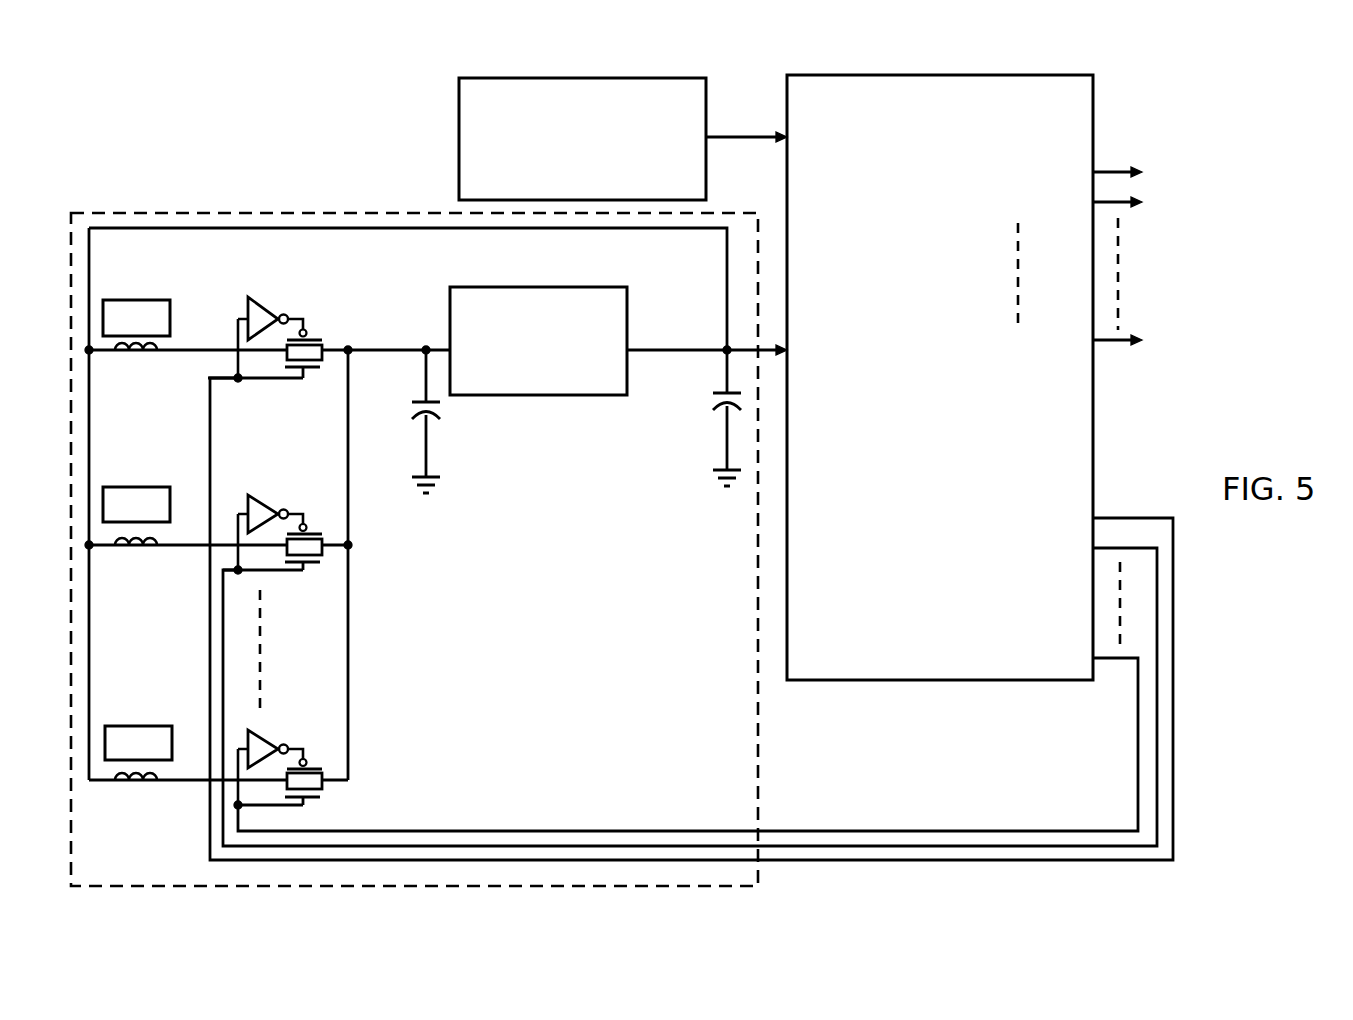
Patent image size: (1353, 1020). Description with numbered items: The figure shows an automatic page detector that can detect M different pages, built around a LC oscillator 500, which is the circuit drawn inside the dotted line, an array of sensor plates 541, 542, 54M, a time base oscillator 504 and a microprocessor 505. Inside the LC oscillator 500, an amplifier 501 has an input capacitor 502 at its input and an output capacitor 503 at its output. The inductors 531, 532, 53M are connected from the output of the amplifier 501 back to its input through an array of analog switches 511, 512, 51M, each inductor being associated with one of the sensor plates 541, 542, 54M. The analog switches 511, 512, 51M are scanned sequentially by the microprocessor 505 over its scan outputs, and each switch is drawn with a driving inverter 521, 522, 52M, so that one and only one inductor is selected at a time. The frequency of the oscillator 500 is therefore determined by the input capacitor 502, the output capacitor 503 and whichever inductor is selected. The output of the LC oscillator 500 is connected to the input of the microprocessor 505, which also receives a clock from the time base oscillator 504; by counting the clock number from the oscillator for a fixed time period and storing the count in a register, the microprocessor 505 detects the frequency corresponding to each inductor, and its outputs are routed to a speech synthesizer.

The LC oscillator 500 is at (86, 205).
The amplifier 501 is at (593, 290).
The input capacitor 502 is at (442, 408).
The output capacitor 503 is at (698, 405).
The time base oscillator 504 is at (459, 120).
The microprocessor 505 is at (1083, 118).
The analog switch 511 is at (327, 342).
The analog switch 512 is at (333, 531).
The analog switch 51M is at (327, 758).
The inverter 521 is at (265, 310).
The inverter 522 is at (257, 495).
The inverter 52M is at (275, 733).
The inductor 531 is at (135, 372).
The inductor 532 is at (135, 558).
The inductor 53M is at (140, 790).
The sensor plate 541 is at (157, 300).
The sensor plate 542 is at (143, 487).
The sensor plate 54M is at (143, 726).